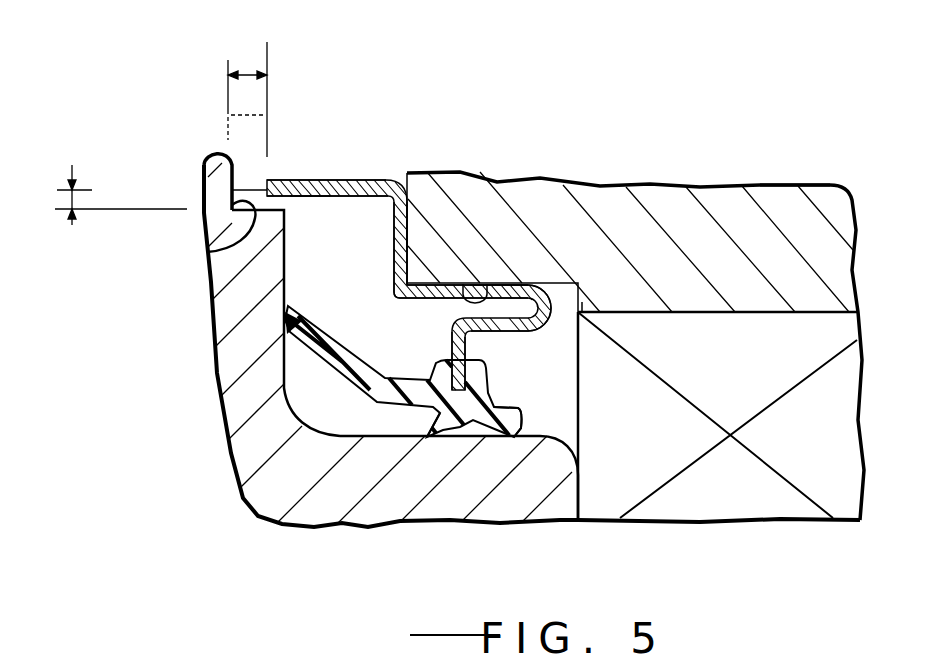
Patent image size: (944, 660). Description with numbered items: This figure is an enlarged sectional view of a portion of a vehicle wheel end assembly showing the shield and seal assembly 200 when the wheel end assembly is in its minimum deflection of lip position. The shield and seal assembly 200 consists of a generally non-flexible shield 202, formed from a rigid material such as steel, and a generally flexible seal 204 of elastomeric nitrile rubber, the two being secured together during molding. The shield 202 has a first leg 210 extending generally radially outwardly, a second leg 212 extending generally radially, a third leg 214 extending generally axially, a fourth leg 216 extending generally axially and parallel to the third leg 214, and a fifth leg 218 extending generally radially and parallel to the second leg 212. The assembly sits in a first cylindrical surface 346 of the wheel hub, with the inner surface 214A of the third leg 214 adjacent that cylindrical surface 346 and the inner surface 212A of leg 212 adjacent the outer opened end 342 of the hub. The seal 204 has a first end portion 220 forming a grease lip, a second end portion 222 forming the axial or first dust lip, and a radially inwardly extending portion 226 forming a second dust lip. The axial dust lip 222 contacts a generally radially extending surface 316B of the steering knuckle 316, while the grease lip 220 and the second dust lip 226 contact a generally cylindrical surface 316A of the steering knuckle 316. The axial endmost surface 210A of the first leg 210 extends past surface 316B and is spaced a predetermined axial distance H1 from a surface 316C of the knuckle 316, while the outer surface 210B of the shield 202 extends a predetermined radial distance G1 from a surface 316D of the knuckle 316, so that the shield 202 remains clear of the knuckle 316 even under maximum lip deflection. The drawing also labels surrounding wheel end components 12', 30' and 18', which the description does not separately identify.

The shield and seal assembly 200 is at (339, 293).
The shield 202 is at (339, 242).
The seal 204 is at (406, 399).
The first leg 210 is at (313, 180).
The axial endmost surface 210A is at (232, 190).
The outer surface 210B is at (305, 198).
The second leg 212 is at (392, 260).
The inner surface 212A is at (414, 206).
The third leg 214 is at (432, 304).
The inner surface of third leg 214A is at (517, 283).
The fourth leg 216 is at (513, 336).
The fifth leg 218 is at (467, 353).
The first end portion 220 is at (522, 418).
The second end portion 222 is at (283, 321).
The radially inwardly extending portion 226 is at (430, 434).
The steering knuckle 316 is at (250, 514).
The generally cylindrical surface 316A is at (356, 428).
The generally radially extending surface 316B is at (289, 357).
The surface of steering knuckle 316C is at (236, 162).
The surface of steering knuckle 316D is at (207, 252).
The outer opened end 342 is at (392, 256).
The first cylindrical surface 346 is at (467, 283).
The gasket 12' is at (635, 330).
The gasket surface 30' is at (807, 177).
The substrate 18' is at (718, 438).
The predetermined radial distance G1 is at (57, 200).
The predetermined axial distance H1 is at (246, 73).